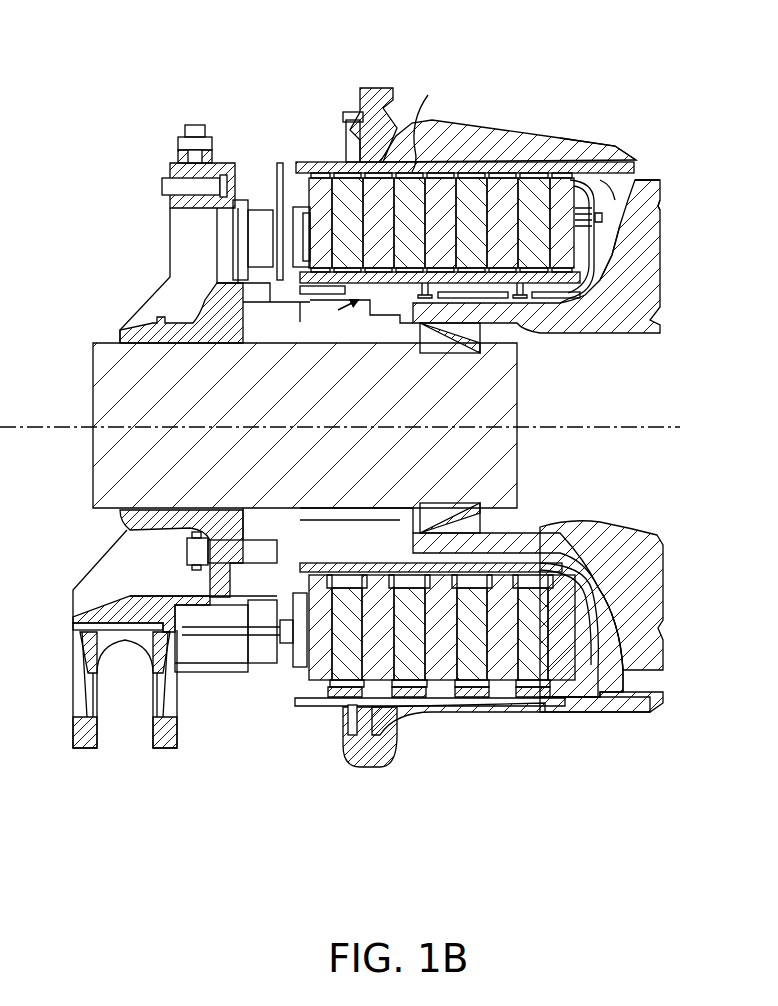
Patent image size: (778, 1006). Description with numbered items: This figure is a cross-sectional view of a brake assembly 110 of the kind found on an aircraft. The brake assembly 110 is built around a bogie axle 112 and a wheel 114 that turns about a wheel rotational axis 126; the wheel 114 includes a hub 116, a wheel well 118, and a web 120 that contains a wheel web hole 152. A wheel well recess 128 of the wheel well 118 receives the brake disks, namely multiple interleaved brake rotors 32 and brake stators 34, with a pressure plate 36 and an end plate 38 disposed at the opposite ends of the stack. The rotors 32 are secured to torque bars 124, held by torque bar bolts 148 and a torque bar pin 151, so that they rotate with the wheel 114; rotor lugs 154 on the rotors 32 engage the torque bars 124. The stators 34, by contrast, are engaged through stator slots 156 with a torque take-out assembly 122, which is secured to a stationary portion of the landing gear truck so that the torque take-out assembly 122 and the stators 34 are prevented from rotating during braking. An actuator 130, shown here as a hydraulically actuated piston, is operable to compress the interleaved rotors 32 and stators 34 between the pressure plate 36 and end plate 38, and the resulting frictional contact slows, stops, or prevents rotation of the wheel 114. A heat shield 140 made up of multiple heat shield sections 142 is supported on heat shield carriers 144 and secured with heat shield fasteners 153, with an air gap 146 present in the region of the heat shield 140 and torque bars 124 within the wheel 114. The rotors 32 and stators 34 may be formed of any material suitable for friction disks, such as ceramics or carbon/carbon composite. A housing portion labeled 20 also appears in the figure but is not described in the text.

The brake assembly 110 is at (688, 88).
The bogie axle 112 is at (72, 385).
The wheel 114 is at (538, 120).
The hub 116 is at (490, 318).
The wheel well 118 is at (648, 160).
The web 120 is at (645, 607).
The torque take-out assembly 122 is at (328, 313).
The torque bar 124 is at (304, 163).
The wheel rotational axis 126 is at (570, 427).
The wheel well recess 128 is at (615, 217).
The actuator 130 is at (225, 690).
The heat shield 140 is at (315, 742).
The heat shield section 142 is at (470, 160).
The heat shield carrier 144 is at (376, 712).
The air gap 146 is at (376, 168).
The torque bar bolt 148 is at (355, 147).
The torque bar pin 151 is at (613, 188).
The wheel web hole 152 is at (667, 204).
The heat shield fastener 153 is at (350, 712).
The rotor lug 154 is at (412, 176).
The stator slot 156 is at (380, 300).
The housing body 20 is at (632, 238).
The brake rotor 32 is at (337, 237).
The brake stator 34 is at (368, 237).
The pressure plate 36 is at (310, 237).
The end plate 38 is at (552, 237).